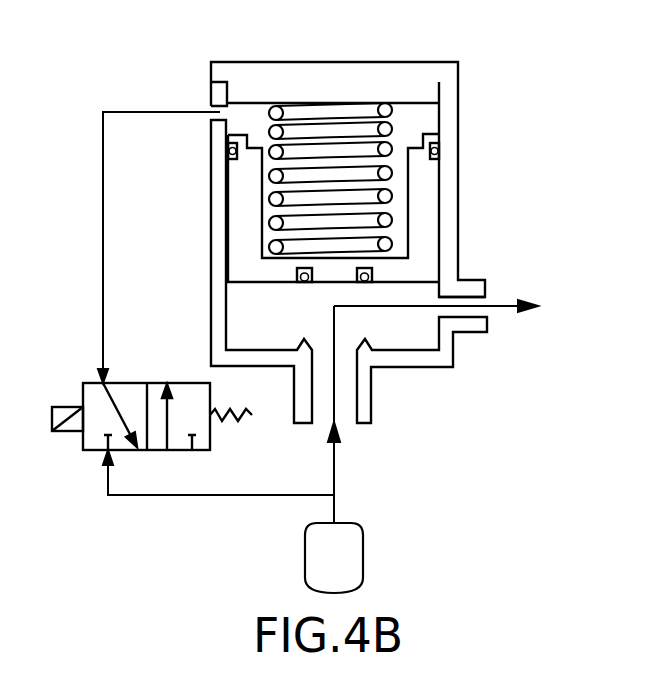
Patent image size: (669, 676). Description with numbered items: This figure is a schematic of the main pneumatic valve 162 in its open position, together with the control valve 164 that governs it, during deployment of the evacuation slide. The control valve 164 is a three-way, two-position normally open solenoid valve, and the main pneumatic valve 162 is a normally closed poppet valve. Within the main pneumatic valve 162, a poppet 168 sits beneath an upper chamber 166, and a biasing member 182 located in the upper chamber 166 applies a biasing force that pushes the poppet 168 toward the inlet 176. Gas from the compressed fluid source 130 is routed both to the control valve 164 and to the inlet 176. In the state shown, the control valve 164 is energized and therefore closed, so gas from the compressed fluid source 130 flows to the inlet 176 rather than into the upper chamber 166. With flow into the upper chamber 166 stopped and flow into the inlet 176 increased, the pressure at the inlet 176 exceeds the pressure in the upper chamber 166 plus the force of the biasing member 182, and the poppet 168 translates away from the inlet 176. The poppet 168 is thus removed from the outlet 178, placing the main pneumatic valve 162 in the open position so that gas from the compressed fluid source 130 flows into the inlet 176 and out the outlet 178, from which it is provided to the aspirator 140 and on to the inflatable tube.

The compressed fluid source 130 is at (350, 574).
The aspirator 140 is at (455, 307).
The main pneumatic valve 162 is at (458, 62).
The control valve 164 is at (93, 383).
The upper chamber 166 is at (253, 132).
The poppet 168 is at (418, 192).
The inlet 176 is at (347, 418).
The outlet 178 is at (485, 296).
The biasing member 182 is at (337, 107).